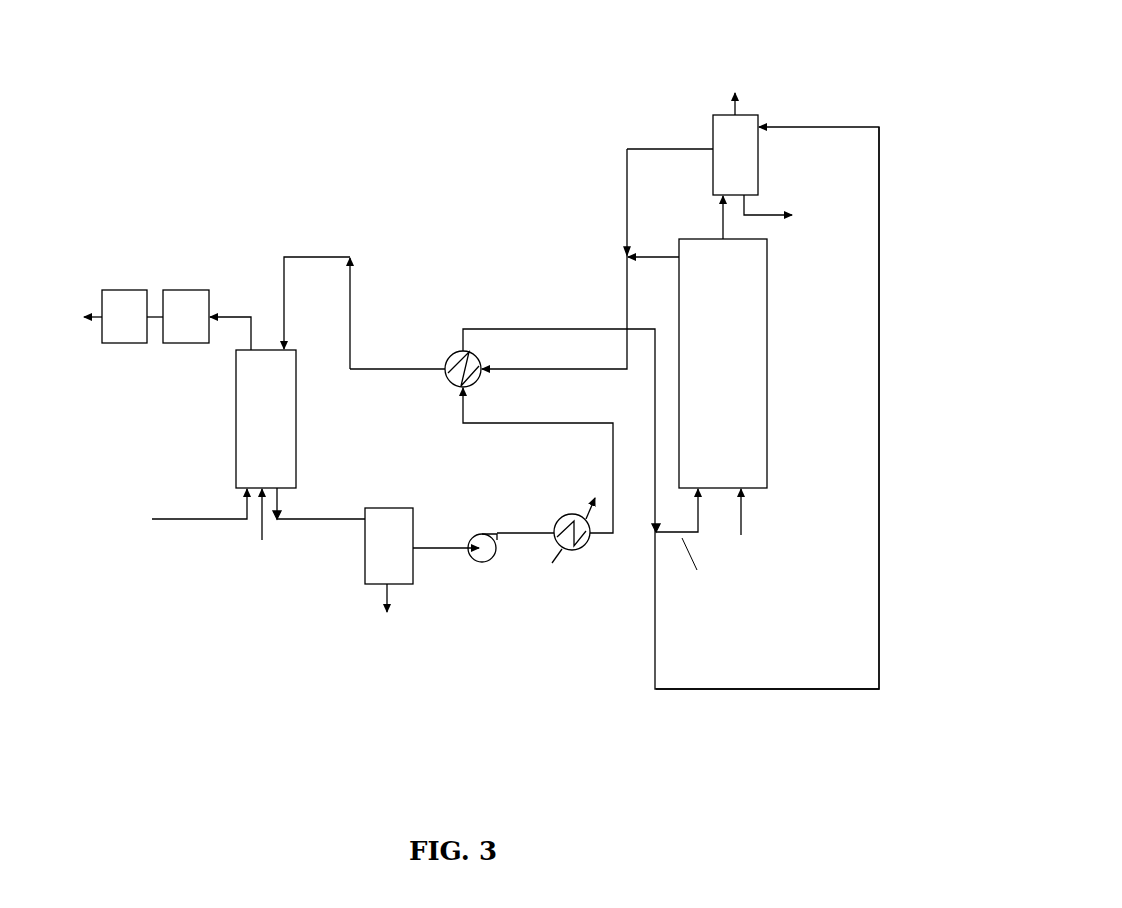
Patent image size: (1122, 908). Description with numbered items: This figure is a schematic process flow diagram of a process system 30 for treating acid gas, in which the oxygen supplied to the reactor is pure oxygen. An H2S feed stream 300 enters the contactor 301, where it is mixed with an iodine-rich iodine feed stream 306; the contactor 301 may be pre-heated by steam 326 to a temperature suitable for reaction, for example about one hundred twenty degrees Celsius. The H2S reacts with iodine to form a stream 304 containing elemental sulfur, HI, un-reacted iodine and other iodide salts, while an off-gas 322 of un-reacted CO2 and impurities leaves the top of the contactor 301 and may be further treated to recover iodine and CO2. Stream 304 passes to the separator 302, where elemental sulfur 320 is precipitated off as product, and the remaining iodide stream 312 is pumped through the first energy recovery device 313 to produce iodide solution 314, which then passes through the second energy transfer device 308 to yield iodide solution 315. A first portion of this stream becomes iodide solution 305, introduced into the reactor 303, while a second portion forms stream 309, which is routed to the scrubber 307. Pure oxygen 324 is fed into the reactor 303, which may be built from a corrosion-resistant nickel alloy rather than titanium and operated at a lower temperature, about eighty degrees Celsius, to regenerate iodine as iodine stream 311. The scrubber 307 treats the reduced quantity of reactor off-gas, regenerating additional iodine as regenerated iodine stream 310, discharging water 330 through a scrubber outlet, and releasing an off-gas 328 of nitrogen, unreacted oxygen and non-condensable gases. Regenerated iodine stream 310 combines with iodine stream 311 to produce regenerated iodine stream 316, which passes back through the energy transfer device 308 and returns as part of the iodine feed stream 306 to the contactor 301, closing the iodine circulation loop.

The process system 30 is at (232, 685).
The H2S feed stream 300 is at (198, 527).
The contactor 301 is at (255, 423).
The separator 302 is at (367, 573).
The reactor 303 is at (768, 355).
The stream 304 is at (323, 510).
The iodide solution 305 is at (677, 538).
The iodine feed stream 306 is at (403, 365).
The scrubber 307 is at (759, 113).
The energy transfer device 308 is at (447, 380).
The stream 309 is at (880, 460).
The regenerated iodine stream 310 is at (663, 147).
The iodine stream 311 is at (653, 252).
The iodide stream 312 is at (528, 523).
The first energy recovery device 313 is at (575, 538).
The iodide solution 314 is at (607, 445).
The iodide solution 315 is at (560, 326).
The regenerated iodine stream 316 is at (553, 378).
The elemental sulfur 320 is at (393, 633).
The off-gas 322 is at (233, 310).
The pure oxygen 324 is at (765, 523).
The steam 326 is at (247, 535).
The off-gas 328 is at (735, 77).
The water 330 is at (811, 197).